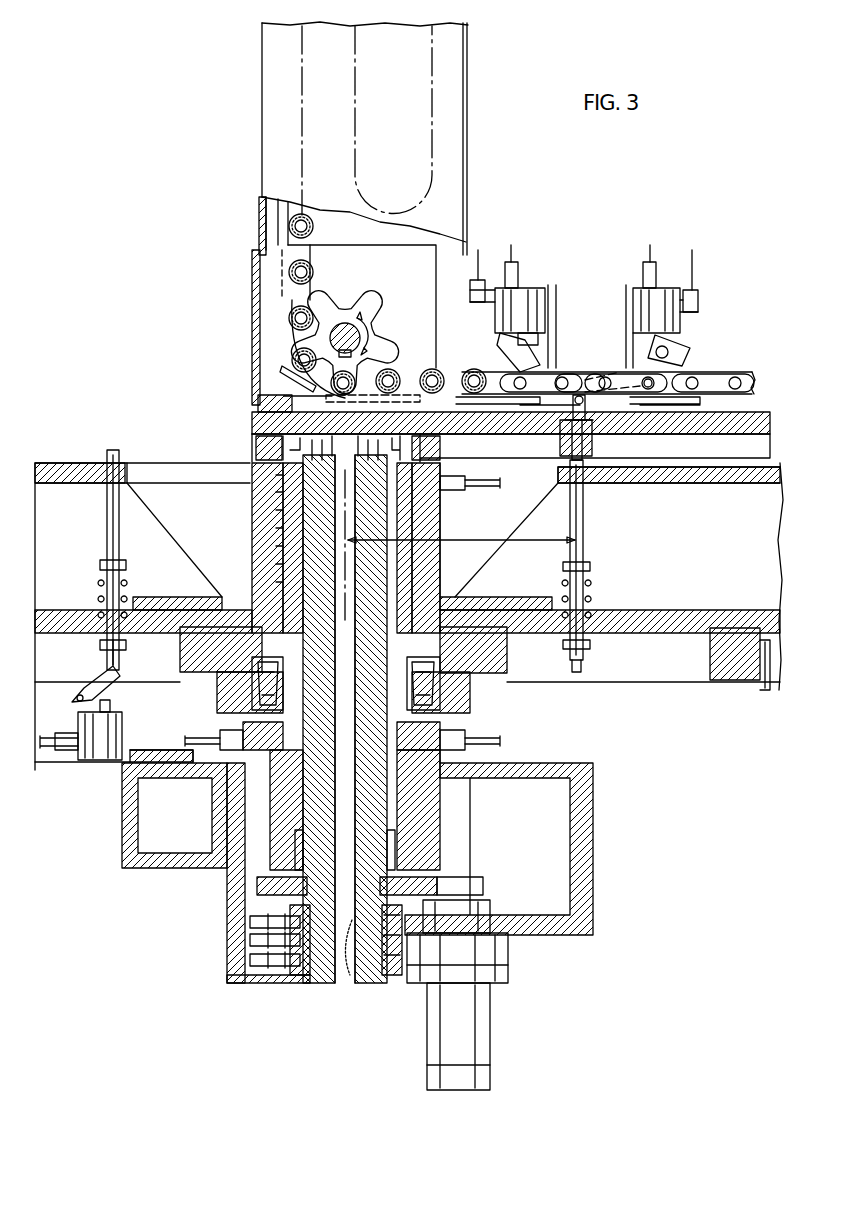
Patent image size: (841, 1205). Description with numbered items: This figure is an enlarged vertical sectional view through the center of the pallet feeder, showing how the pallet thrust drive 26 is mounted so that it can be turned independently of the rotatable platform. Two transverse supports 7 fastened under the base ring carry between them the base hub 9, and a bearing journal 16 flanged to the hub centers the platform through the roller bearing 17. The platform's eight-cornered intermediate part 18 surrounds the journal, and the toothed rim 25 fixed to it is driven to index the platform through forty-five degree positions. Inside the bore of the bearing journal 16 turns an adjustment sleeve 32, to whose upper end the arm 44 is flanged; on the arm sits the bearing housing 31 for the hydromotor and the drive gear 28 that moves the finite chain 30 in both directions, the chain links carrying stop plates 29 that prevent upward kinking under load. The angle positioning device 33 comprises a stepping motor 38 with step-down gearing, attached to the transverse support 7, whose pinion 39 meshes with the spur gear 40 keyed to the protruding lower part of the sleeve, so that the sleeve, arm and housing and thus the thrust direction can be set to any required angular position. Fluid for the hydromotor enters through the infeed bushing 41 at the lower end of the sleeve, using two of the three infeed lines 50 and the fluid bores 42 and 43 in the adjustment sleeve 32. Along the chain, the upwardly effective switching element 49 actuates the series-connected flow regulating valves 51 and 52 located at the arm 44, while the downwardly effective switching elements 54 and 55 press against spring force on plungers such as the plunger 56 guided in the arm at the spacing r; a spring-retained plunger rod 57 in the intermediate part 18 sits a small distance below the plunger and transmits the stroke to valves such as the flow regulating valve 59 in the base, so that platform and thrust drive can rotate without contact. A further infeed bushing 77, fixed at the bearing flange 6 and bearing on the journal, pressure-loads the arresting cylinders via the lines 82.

The bearing flange 6 is at (500, 660).
The transverse support 7 is at (128, 825).
The base hub 9 is at (445, 800).
The bearing journal 16 is at (280, 523).
The roller bearing 17 is at (262, 700).
The intermediate part 18 is at (75, 519).
The toothed rim 25 is at (712, 660).
The pallet thrust drive 26 is at (488, 217).
The drive gear 28 is at (375, 298).
The stop plate 29 is at (292, 326).
The chain 30 is at (726, 368).
The bearing housing 31 is at (258, 404).
The adjustment sleeve 32 is at (300, 553).
The angle positioning device 33 is at (413, 995).
The stepping motor 38 is at (490, 1042).
The pinion 39 is at (485, 885).
The spur gear 40 is at (258, 887).
The infeed bushing 41 is at (300, 980).
The fluid bore 42 is at (322, 822).
The fluid bore 43 is at (352, 978).
The arm 44 is at (256, 428).
The switching element 49 is at (660, 383).
The infeed lines 50 is at (248, 960).
The flow regulating valve 51 is at (522, 290).
The flow regulating valve 52 is at (645, 290).
The switching element 54 is at (580, 382).
The switching element 55 is at (601, 351).
The plunger 56 is at (596, 450).
The plunger rod 57 is at (107, 540).
The flow regulating valve 59 is at (95, 760).
The infeed bushing 77 is at (438, 572).
The lines 82 is at (200, 736).
The spacing r is at (461, 527).